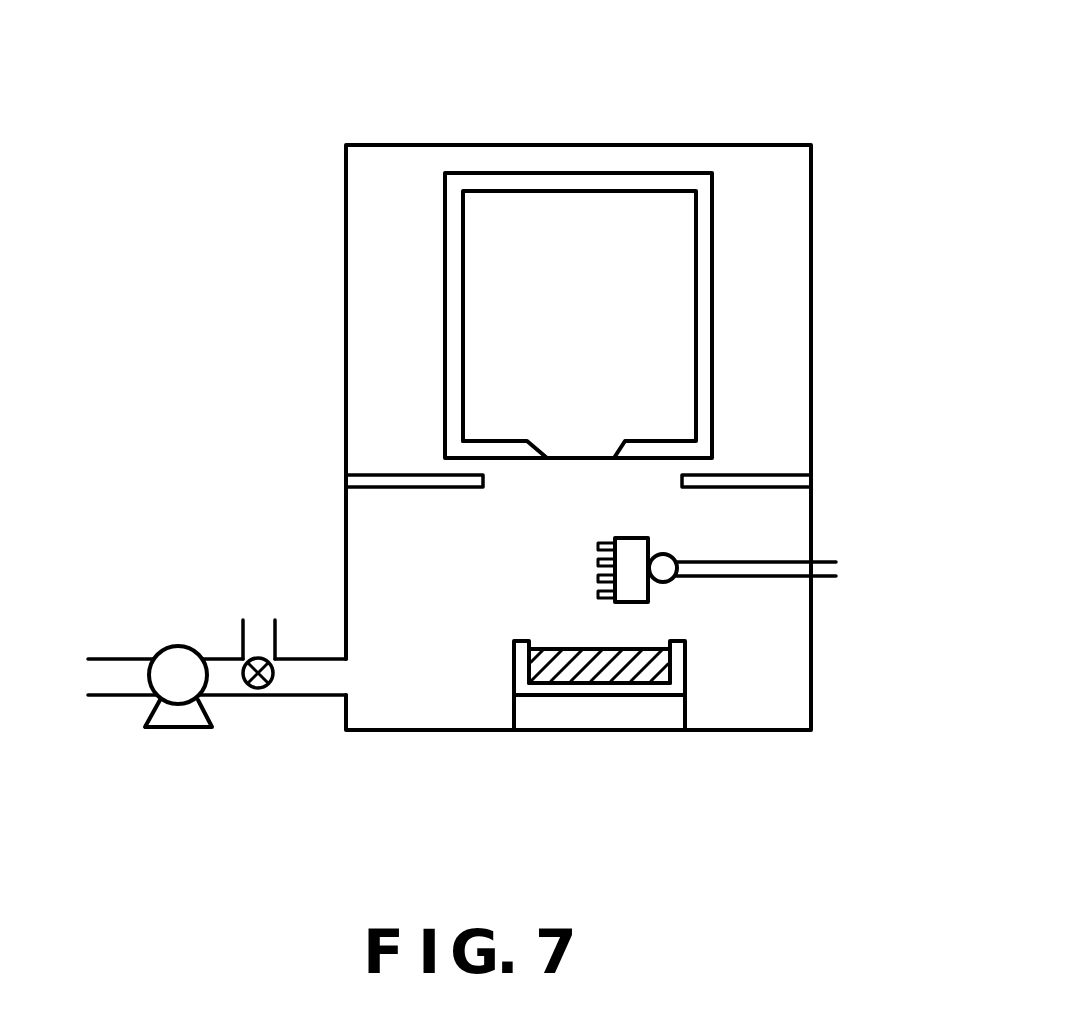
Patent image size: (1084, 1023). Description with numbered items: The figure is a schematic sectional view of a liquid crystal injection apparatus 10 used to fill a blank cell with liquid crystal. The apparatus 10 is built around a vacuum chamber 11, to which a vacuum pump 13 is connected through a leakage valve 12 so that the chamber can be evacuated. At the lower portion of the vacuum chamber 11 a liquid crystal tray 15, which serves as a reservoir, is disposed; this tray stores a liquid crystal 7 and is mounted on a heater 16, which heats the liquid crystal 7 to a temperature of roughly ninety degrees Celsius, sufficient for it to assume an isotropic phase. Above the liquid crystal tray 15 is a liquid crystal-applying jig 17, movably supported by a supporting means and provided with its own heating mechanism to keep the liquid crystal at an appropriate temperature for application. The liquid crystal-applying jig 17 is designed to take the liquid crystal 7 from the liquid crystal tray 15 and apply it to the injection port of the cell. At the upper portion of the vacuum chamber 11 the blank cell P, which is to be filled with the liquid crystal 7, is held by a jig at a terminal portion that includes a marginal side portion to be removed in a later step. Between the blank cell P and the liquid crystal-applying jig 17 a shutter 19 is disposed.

The liquid crystal injection apparatus 10 is at (862, 141).
The vacuum chamber 11 is at (812, 330).
The blank cell P is at (608, 215).
The shutter 19 is at (775, 475).
The liquid crystal-applying jig 17 is at (640, 548).
The heater 16 is at (540, 712).
The liquid crystal tray 15 is at (660, 688).
The liquid crystal 7 is at (596, 668).
The leakage valve 12 is at (258, 690).
The vacuum pump 13 is at (177, 660).